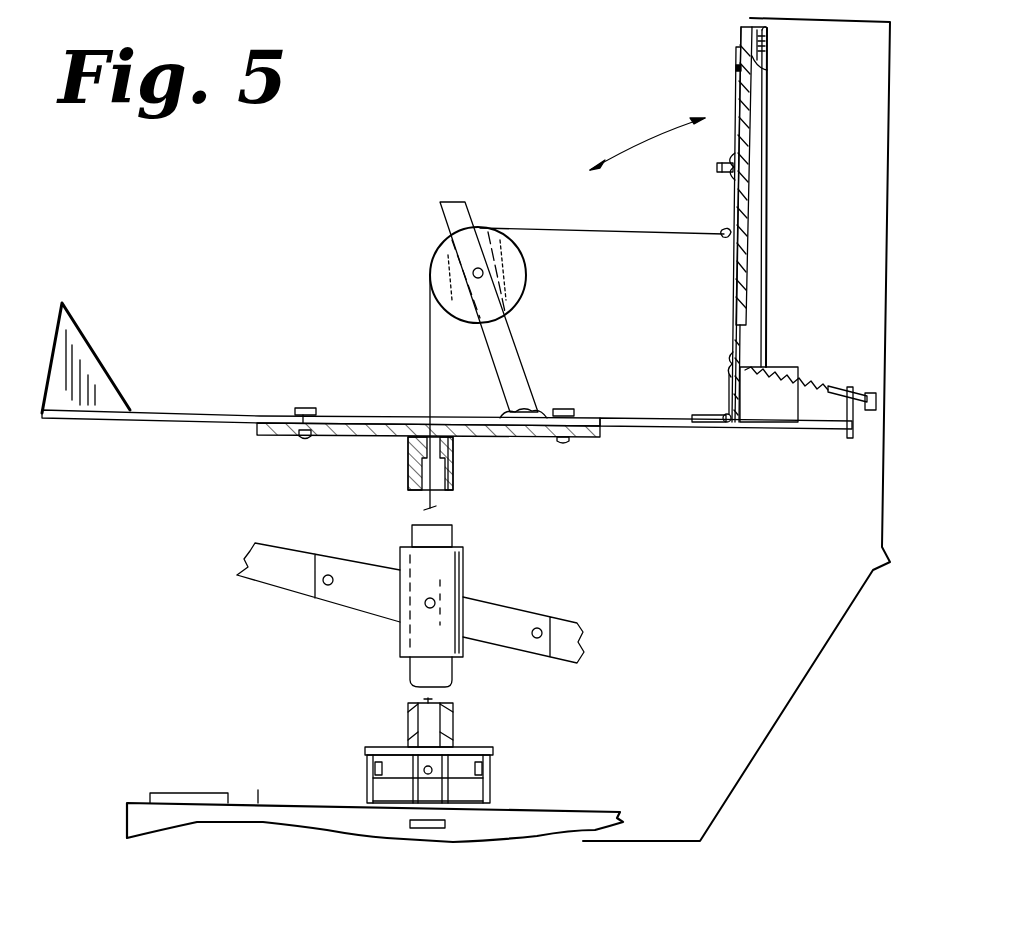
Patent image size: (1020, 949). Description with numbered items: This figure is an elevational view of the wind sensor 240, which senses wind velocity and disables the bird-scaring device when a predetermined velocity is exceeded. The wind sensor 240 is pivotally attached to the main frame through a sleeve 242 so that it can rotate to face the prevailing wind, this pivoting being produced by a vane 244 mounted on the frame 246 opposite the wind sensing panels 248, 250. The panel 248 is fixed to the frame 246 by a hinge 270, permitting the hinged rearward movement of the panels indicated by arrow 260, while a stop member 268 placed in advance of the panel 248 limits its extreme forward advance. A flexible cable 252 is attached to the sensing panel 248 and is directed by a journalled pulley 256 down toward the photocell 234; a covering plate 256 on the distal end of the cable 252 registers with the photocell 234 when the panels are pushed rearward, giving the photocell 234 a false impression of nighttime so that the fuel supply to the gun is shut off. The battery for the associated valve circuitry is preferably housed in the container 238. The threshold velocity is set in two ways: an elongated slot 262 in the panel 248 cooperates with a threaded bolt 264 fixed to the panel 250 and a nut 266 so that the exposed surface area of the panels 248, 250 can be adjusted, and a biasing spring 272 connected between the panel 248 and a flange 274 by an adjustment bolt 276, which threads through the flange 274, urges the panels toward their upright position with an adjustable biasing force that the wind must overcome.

The wind sensor 240 is at (316, 211).
The sleeve 242 is at (465, 573).
The vane 244 is at (91, 348).
The frame 246 is at (246, 412).
The wind sensing panel 248 is at (732, 294).
The wind sensing panel 250 is at (762, 68).
The flexible cable 252 is at (627, 232).
The journalled pulley / covering plate 256 is at (522, 290).
The arrow 260 is at (658, 133).
The elongated slot 262 is at (735, 70).
The threaded bolt 264 is at (716, 167).
The nut 266 is at (727, 174).
The stop member 268 is at (752, 430).
The hinge 270 is at (707, 415).
The biasing spring 272 is at (812, 378).
The flange 274 is at (856, 436).
The adjustment bolt 276 is at (860, 392).
The photocell 234 is at (397, 797).
The container 238 is at (204, 787).